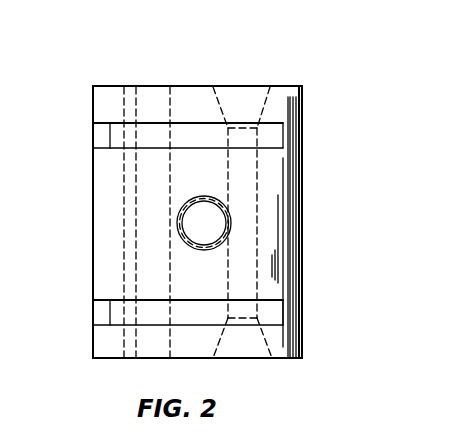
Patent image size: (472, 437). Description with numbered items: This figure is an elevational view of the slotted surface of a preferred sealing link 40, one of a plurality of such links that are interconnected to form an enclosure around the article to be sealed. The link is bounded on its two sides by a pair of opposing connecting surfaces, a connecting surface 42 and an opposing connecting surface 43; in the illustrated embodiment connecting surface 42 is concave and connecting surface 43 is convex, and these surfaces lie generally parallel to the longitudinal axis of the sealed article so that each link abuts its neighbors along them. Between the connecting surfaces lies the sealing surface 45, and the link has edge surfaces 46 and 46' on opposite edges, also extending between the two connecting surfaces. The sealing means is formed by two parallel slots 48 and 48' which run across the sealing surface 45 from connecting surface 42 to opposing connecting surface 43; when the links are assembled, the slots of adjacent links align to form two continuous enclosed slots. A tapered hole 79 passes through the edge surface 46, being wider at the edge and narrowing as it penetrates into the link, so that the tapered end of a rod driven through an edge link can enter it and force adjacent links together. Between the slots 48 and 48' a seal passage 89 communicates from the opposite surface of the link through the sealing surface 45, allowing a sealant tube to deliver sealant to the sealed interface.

The sealing link 40 is at (318, 81).
The connecting surface 42 is at (92, 108).
The opposing connecting surface 43 is at (303, 112).
The sealing surface 45 is at (185, 103).
The edge surface 46 is at (188, 96).
The opposite edge surface 46' is at (171, 344).
The slot 48 is at (221, 176).
The slot 48' is at (291, 338).
The tapered hole 79 is at (271, 91).
The seal passage 89 is at (220, 212).